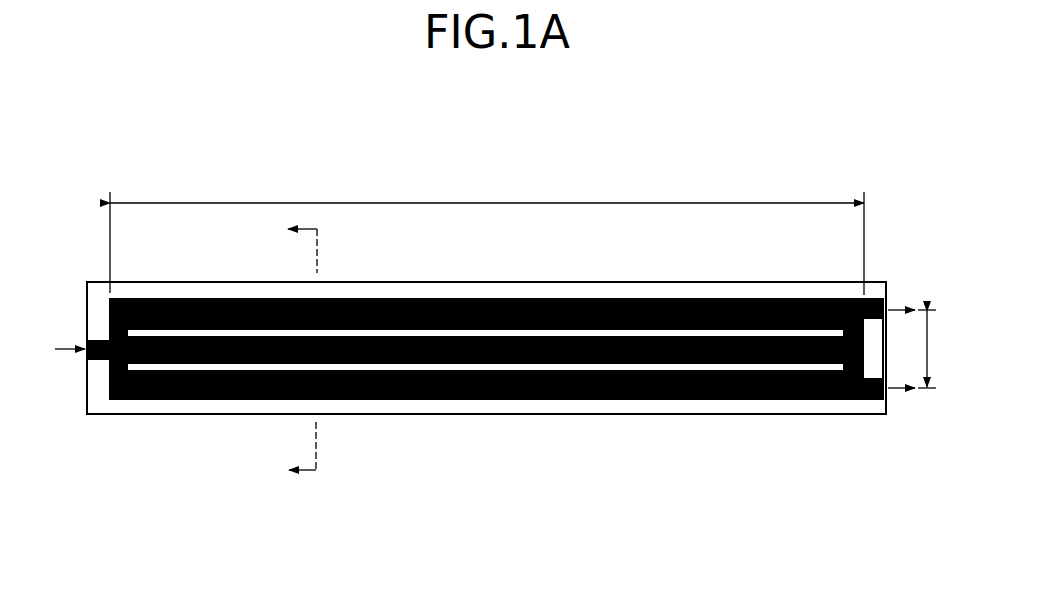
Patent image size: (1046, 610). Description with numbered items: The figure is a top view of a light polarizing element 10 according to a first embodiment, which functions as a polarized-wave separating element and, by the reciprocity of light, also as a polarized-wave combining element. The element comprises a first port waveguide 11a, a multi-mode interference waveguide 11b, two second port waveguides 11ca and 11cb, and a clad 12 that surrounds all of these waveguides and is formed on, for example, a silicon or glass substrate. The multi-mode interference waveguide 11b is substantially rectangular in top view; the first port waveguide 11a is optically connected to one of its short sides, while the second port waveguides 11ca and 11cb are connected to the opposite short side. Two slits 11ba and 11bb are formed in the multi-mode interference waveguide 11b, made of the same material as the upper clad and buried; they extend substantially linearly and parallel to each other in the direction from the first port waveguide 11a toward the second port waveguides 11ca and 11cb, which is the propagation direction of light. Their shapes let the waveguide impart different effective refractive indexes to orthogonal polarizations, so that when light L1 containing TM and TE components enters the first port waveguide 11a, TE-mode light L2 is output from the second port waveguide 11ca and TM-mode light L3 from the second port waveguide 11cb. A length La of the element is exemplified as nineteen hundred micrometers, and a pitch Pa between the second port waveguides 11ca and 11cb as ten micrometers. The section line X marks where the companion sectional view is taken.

The light polarizing element 10 is at (563, 172).
The first port waveguide 11a is at (99, 363).
The multi-mode interference waveguide 11b is at (455, 404).
The slit 11ba is at (549, 370).
The slit 11bb is at (628, 335).
The second port waveguide 11ca is at (874, 296).
The second port waveguide 11cb is at (873, 403).
The clad 12 is at (177, 409).
The length La is at (487, 233).
The light L1 is at (58, 348).
The light L2 is at (893, 308).
The light L3 is at (897, 394).
The pitch Pa is at (930, 350).
The X-X line X is at (290, 350).